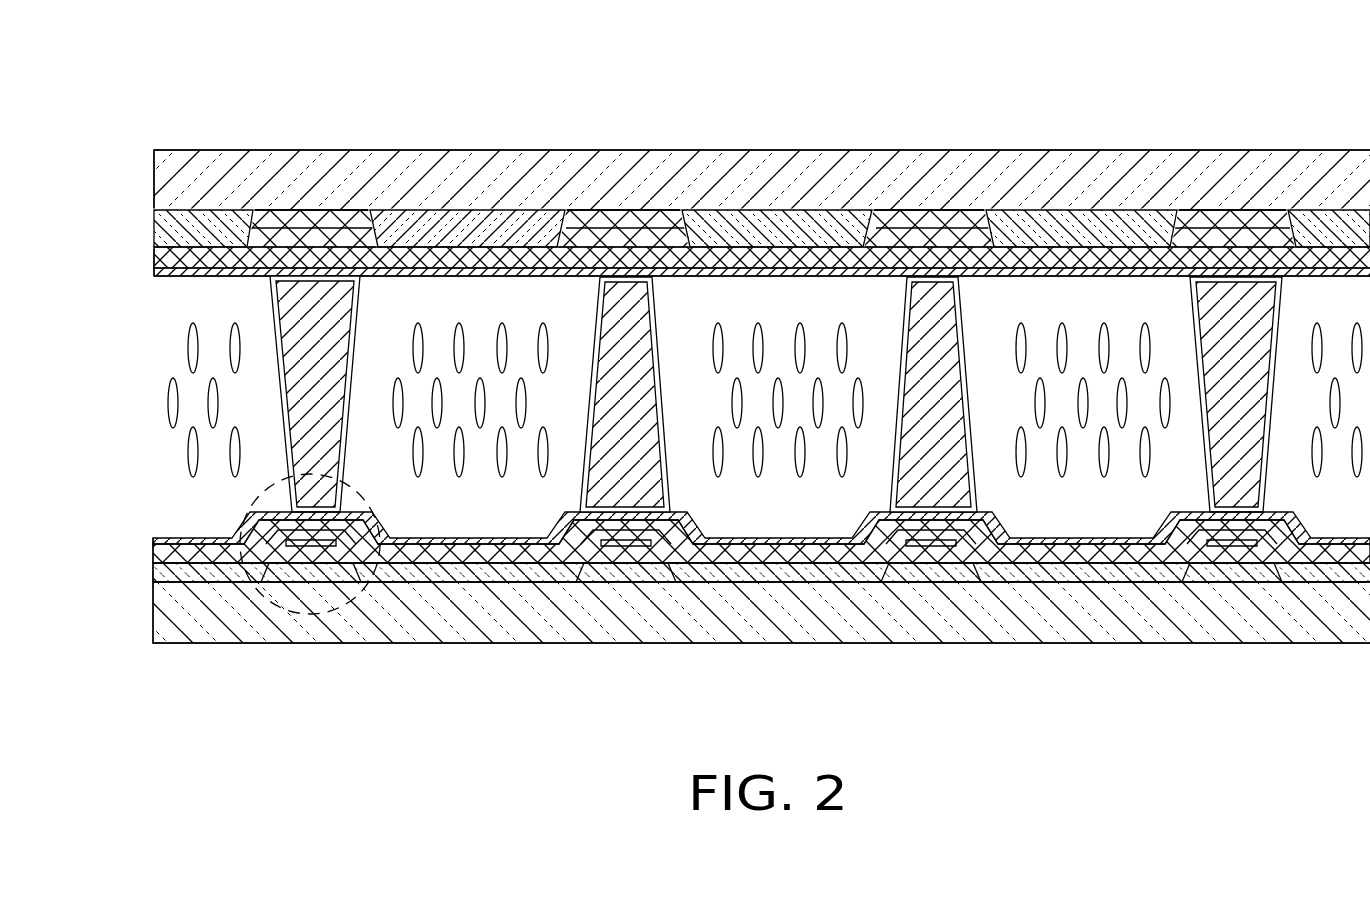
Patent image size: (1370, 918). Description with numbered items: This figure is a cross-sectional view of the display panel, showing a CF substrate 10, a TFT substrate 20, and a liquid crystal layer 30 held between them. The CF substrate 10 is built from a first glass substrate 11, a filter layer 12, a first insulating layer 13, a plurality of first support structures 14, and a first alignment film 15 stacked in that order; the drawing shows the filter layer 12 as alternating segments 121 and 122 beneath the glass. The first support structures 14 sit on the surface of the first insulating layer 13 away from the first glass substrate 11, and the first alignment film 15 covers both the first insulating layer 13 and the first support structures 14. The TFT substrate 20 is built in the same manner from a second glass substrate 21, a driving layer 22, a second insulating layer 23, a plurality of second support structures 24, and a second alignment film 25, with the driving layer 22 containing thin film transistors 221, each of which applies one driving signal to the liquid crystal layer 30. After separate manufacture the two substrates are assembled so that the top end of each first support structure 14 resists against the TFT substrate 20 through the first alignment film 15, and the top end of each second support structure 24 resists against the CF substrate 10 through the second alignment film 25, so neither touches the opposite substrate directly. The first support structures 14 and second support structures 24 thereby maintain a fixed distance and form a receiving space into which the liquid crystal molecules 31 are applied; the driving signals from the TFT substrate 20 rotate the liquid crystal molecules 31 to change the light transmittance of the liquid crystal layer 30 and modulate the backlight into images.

The CF substrate 10 is at (110, 205).
The first glass substrate 11 is at (166, 180).
The filter layer 12 is at (317, 98).
The black matrix 121 is at (282, 223).
The color resist 122 is at (208, 225).
The first insulating layer 13 is at (166, 264).
The first support structures 14 is at (325, 303).
The first alignment film 15 is at (168, 273).
The TFT substrate 20 is at (99, 573).
The second glass substrate 21 is at (172, 625).
The driving layer 22 is at (175, 570).
The thin film transistor 221 is at (352, 597).
The second insulating layer 23 is at (175, 557).
The second support structures 24 is at (640, 478).
The second alignment film 25 is at (193, 545).
The liquid crystal layer 30 is at (117, 393).
The liquid crystal molecules 31 is at (193, 447).